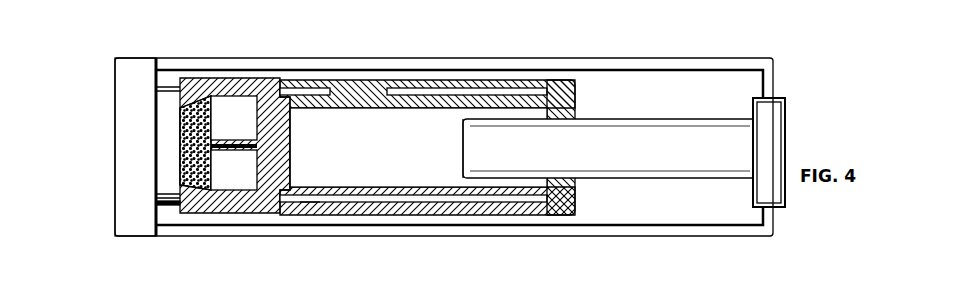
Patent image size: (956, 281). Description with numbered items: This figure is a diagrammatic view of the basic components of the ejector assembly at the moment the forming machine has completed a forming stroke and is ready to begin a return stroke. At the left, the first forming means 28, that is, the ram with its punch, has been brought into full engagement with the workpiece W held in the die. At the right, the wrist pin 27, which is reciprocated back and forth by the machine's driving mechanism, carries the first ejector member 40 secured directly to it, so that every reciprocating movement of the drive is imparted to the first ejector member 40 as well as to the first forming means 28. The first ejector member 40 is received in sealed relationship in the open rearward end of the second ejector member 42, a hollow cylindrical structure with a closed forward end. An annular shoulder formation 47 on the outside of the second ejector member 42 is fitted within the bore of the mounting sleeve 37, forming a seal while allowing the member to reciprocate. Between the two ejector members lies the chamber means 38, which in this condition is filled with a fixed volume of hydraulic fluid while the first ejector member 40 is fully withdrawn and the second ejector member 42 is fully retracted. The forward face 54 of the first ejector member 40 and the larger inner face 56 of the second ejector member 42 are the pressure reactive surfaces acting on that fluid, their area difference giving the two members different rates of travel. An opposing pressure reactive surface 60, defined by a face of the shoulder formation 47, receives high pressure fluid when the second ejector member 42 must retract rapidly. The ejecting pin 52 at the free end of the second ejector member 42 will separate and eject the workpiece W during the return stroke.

The wrist pin 27 is at (786, 126).
The first forming means 28 is at (167, 140).
The mounting sleeve 37 is at (555, 88).
The chamber means 38 is at (399, 156).
The first ejector member 40 is at (650, 162).
The second ejector member 42 is at (268, 115).
The annular shoulder formation 47 is at (346, 95).
The ejecting pin 52 is at (238, 149).
The forward face 54 is at (457, 137).
The inner face 56 is at (290, 141).
The opposing pressure reactive surface 60 is at (308, 212).
The workpiece W is at (208, 124).